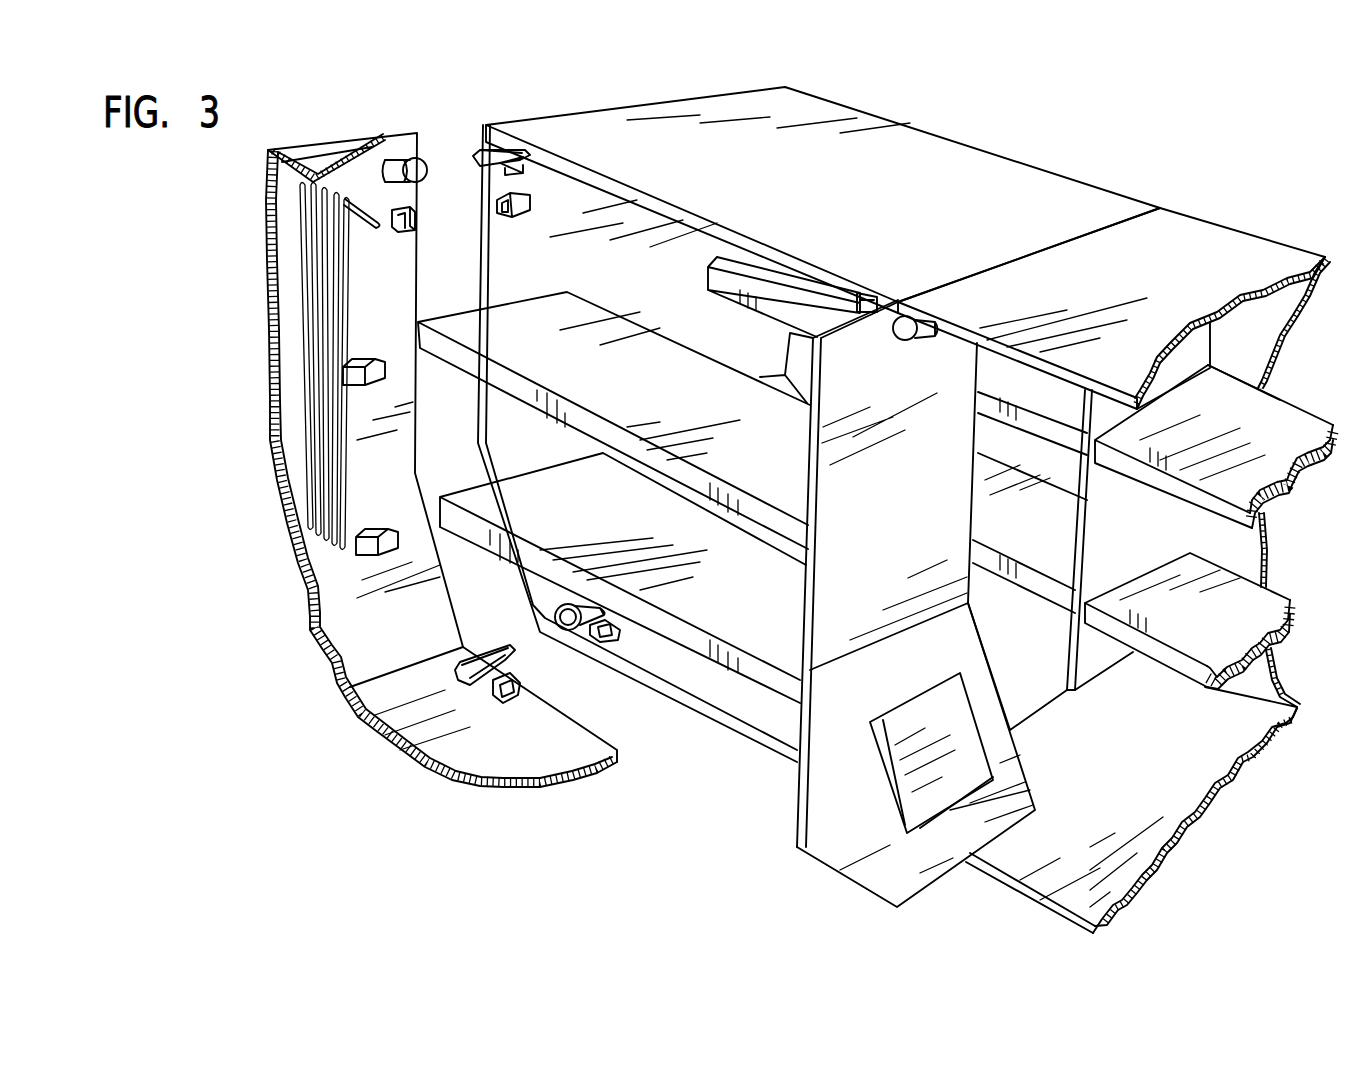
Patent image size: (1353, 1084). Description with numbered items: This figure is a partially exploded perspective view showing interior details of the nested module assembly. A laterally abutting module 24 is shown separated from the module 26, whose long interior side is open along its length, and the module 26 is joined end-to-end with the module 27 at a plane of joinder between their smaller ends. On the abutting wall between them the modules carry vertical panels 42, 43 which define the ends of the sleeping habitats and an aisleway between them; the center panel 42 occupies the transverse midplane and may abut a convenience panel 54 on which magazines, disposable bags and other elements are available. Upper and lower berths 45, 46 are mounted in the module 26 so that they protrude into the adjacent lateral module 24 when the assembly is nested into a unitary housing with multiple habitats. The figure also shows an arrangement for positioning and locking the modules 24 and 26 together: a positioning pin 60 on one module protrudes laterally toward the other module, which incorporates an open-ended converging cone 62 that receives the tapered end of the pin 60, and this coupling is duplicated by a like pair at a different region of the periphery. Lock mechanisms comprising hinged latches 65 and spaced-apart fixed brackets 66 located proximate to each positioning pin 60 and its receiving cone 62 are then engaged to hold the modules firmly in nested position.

The module 24 is at (313, 143).
The module 26 is at (898, 170).
The module 27 is at (1198, 253).
The vertical panel 42 is at (877, 772).
The vertical panel 43 is at (1160, 518).
The upper berth 45 is at (530, 342).
The lower berth 46 is at (495, 517).
The convenience panel 54 is at (895, 853).
The positioning pin 60 is at (480, 157).
The converging cone 62 is at (410, 148).
The hinged latch 65 is at (497, 213).
The fixed bracket 66 is at (415, 213).